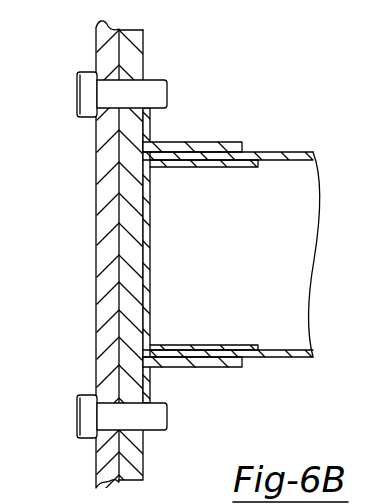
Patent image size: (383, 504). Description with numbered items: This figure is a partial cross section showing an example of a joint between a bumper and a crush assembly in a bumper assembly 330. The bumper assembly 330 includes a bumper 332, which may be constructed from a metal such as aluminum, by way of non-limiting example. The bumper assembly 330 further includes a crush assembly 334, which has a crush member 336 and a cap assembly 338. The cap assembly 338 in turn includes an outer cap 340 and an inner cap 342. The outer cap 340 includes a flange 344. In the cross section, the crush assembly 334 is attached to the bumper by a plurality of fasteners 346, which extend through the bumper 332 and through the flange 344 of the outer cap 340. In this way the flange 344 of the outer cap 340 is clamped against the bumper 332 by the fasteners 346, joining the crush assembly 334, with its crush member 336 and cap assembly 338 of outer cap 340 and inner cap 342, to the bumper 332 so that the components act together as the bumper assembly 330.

The bumper assembly 330 is at (232, 231).
The bumper 332 is at (103, 158).
The crush assembly 334 is at (279, 150).
The crush member 336 is at (283, 353).
The cap assembly 338 is at (208, 143).
The outer cap 340 is at (203, 367).
The inner cap 342 is at (188, 345).
The flange 344 is at (138, 43).
The fasteners 346 is at (78, 92).